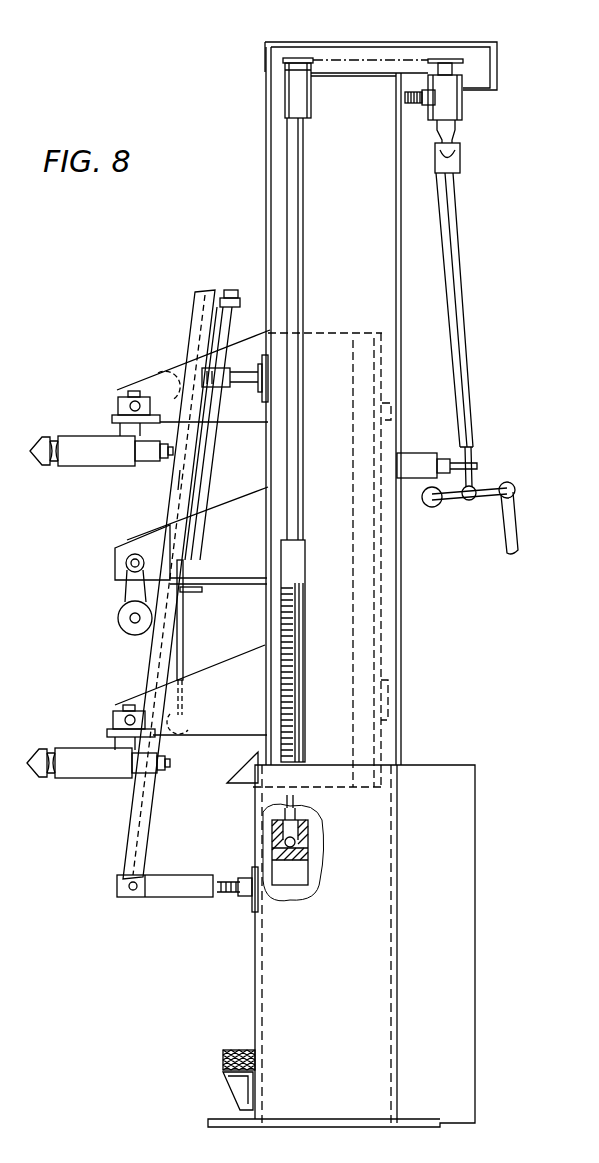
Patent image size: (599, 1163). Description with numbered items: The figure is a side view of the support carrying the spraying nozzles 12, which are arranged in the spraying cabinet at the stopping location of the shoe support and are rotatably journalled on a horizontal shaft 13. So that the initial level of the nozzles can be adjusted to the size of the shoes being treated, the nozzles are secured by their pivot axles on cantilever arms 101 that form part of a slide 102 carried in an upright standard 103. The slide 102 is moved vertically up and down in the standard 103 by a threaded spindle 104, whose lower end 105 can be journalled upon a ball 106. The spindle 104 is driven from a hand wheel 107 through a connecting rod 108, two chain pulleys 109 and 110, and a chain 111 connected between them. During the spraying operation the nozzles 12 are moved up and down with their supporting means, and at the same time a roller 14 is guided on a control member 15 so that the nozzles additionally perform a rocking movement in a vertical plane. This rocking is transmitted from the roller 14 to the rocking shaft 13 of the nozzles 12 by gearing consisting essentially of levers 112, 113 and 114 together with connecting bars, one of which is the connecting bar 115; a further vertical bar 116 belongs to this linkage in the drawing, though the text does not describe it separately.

The spraying nozzle 12 is at (82, 440).
The horizontal shaft 13 is at (130, 407).
The roller 14 is at (125, 615).
The control member 15 is at (160, 653).
The cantilever arm 101 is at (176, 378).
The slide 102 is at (341, 340).
The standard 103 is at (272, 147).
The threaded spindle 104 is at (305, 612).
The lower end of the spindle 105 is at (277, 817).
The ball 106 is at (310, 850).
The hand wheel 107 is at (490, 490).
The connecting rod 108 is at (460, 158).
The chain pulley 109 is at (463, 62).
The chain pulley 110 is at (296, 58).
The chain 111 is at (390, 60).
The lever 112 is at (186, 733).
The lever 113 is at (142, 537).
The lever 114 is at (160, 380).
The connecting bar 115 is at (185, 478).
The vertical bar 116 is at (183, 656).